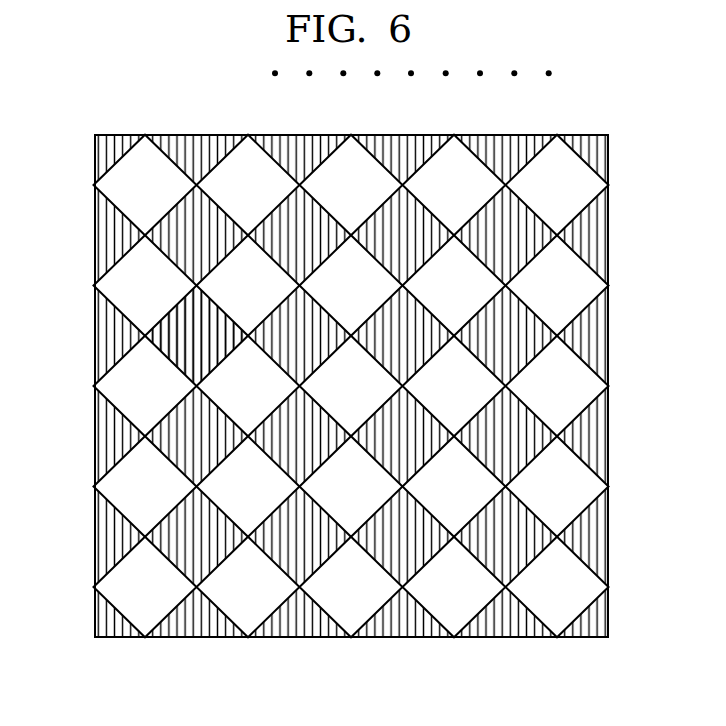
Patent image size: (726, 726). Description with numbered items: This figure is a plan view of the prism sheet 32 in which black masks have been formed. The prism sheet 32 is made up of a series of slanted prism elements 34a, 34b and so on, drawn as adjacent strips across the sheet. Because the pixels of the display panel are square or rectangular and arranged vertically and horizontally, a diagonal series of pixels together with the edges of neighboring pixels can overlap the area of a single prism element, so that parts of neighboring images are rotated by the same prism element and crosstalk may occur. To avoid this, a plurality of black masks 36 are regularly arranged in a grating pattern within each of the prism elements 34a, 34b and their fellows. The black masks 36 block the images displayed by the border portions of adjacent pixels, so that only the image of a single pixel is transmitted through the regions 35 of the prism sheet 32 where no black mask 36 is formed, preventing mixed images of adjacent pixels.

The prism sheet 32 is at (382, 673).
The prism element 34a is at (93, 350).
The prism element 34b is at (196, 350).
The region 35 is at (163, 285).
The black mask 36 is at (137, 336).